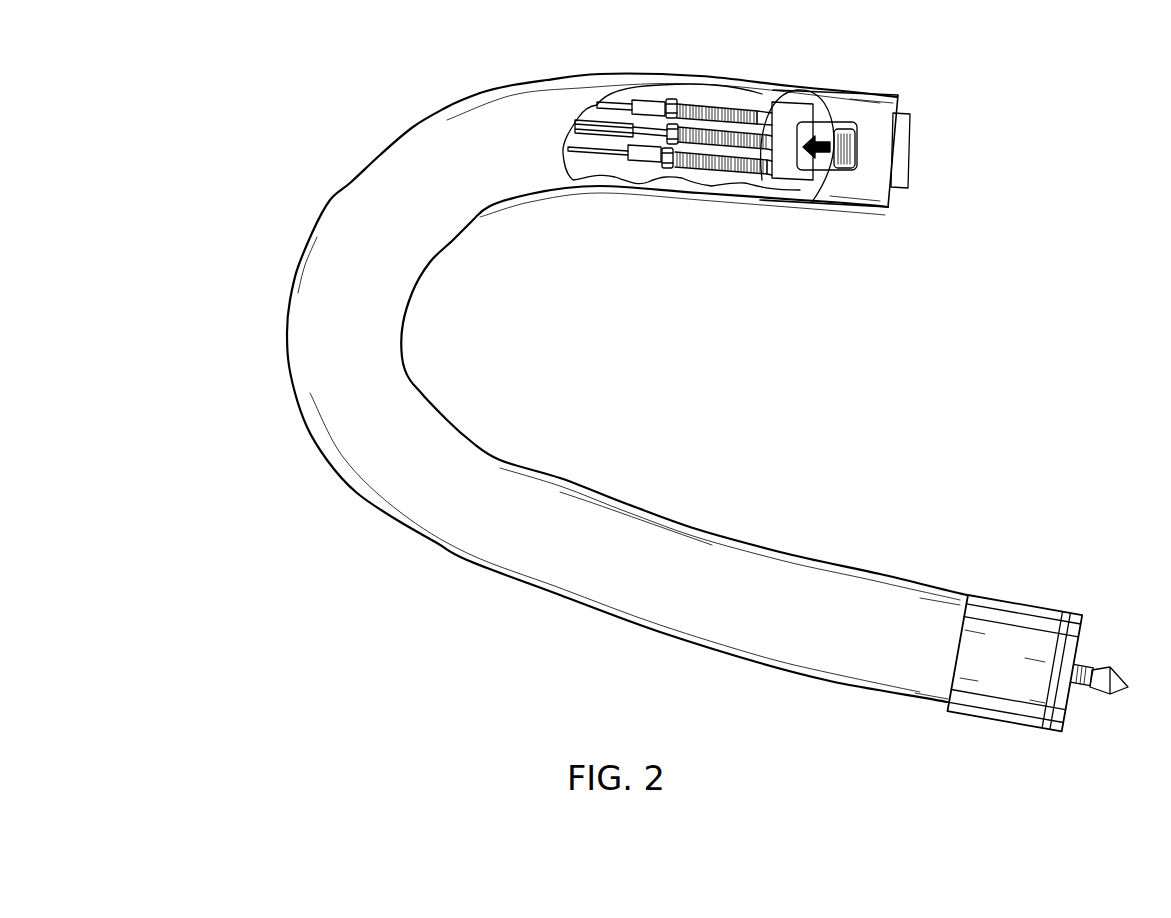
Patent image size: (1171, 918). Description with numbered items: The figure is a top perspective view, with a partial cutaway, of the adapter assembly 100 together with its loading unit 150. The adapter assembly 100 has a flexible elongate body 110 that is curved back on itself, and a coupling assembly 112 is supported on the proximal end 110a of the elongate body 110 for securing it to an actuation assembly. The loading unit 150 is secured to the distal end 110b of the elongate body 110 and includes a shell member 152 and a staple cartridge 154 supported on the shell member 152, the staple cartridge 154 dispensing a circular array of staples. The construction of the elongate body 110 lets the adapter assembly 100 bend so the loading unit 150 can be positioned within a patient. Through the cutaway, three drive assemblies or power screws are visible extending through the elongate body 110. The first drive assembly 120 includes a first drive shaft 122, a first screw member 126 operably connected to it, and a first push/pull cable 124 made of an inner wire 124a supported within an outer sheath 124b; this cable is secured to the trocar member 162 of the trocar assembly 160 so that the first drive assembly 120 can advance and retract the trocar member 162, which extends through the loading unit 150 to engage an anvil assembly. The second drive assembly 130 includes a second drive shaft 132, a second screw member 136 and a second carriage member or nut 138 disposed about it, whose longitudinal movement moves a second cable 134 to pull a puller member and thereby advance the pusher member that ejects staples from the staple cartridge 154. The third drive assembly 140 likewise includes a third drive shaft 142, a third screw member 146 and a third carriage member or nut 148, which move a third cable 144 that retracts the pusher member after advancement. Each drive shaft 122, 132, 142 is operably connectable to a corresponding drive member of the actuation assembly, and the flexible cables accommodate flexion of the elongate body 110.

The adapter assembly 100 is at (318, 174).
The elongate body 110 is at (285, 353).
The proximal end of the elongate body 110a is at (716, 77).
The distal end of the elongate body 110b is at (803, 557).
The coupling assembly 112 is at (906, 213).
The first drive assembly 120 is at (751, 163).
The first drive shaft 122 is at (790, 183).
The first push/pull cable 124 is at (616, 155).
The inner wire 124a is at (598, 104).
The outer sheath 124b is at (600, 147).
The first screw member 126 is at (702, 110).
The second drive assembly 130 is at (736, 185).
The second drive shaft 132 is at (750, 183).
The second cable 134 is at (581, 127).
The second screw member 136 is at (712, 186).
The second carriage member or nut 138 is at (654, 163).
The third drive assembly 140 is at (779, 98).
The third drive shaft 142 is at (797, 90).
The third cable 144 is at (630, 102).
The third screw member 146 is at (758, 104).
The third carriage member or nut 148 is at (671, 99).
The loading unit 150 is at (1012, 578).
The shell member 152 is at (1031, 729).
The staple cartridge 154 is at (1052, 728).
The trocar assembly 160 is at (1102, 702).
The trocar member 162 is at (1095, 667).